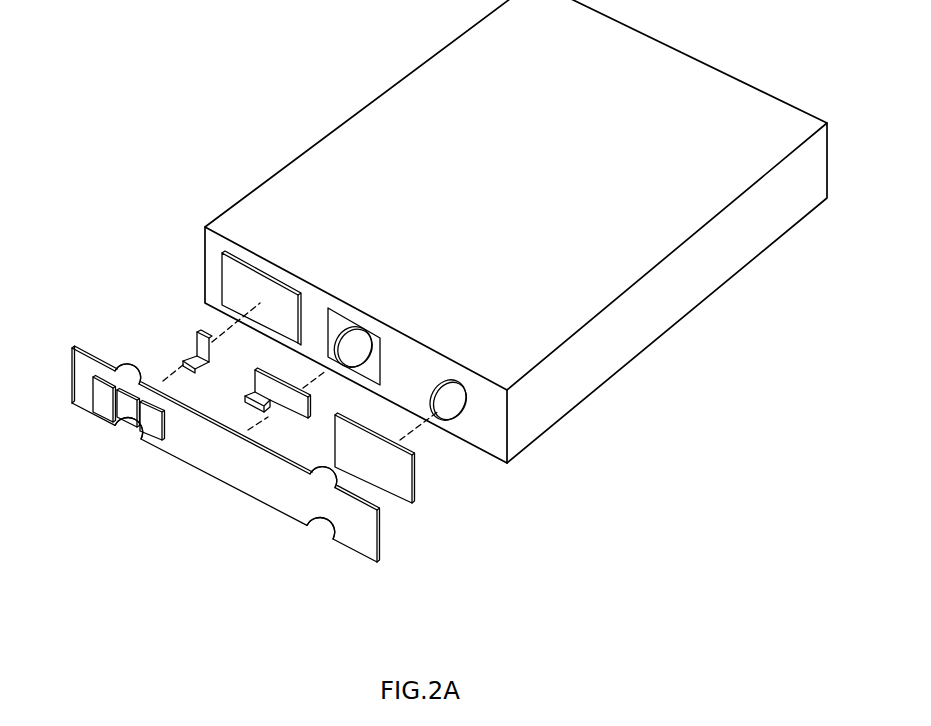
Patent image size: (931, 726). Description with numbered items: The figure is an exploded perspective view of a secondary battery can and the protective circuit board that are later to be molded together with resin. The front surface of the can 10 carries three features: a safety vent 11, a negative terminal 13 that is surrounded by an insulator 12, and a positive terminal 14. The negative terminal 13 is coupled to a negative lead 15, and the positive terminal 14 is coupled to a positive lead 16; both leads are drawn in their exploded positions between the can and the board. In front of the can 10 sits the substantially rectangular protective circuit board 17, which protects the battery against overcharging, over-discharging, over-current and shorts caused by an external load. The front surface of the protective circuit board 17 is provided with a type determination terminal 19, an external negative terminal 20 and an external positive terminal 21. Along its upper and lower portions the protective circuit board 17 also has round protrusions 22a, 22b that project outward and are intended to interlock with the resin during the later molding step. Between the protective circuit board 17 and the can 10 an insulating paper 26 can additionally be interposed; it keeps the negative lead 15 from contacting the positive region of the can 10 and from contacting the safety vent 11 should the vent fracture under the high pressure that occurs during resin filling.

The can 10 is at (347, 128).
The safety vent 11 is at (452, 405).
The insulator 12 is at (337, 310).
The negative terminal 13 is at (352, 331).
The positive terminal 14 is at (253, 293).
The negative lead 15 is at (243, 402).
The positive lead 16 is at (193, 342).
The protective circuit board 17 is at (362, 537).
The type determination terminal 19 is at (100, 398).
The external negative terminal 20 is at (123, 415).
The external positive terminal 21 is at (145, 447).
The round protrusion 22a is at (128, 440).
The round protrusion 22b is at (115, 368).
The insulating paper 26 is at (402, 480).